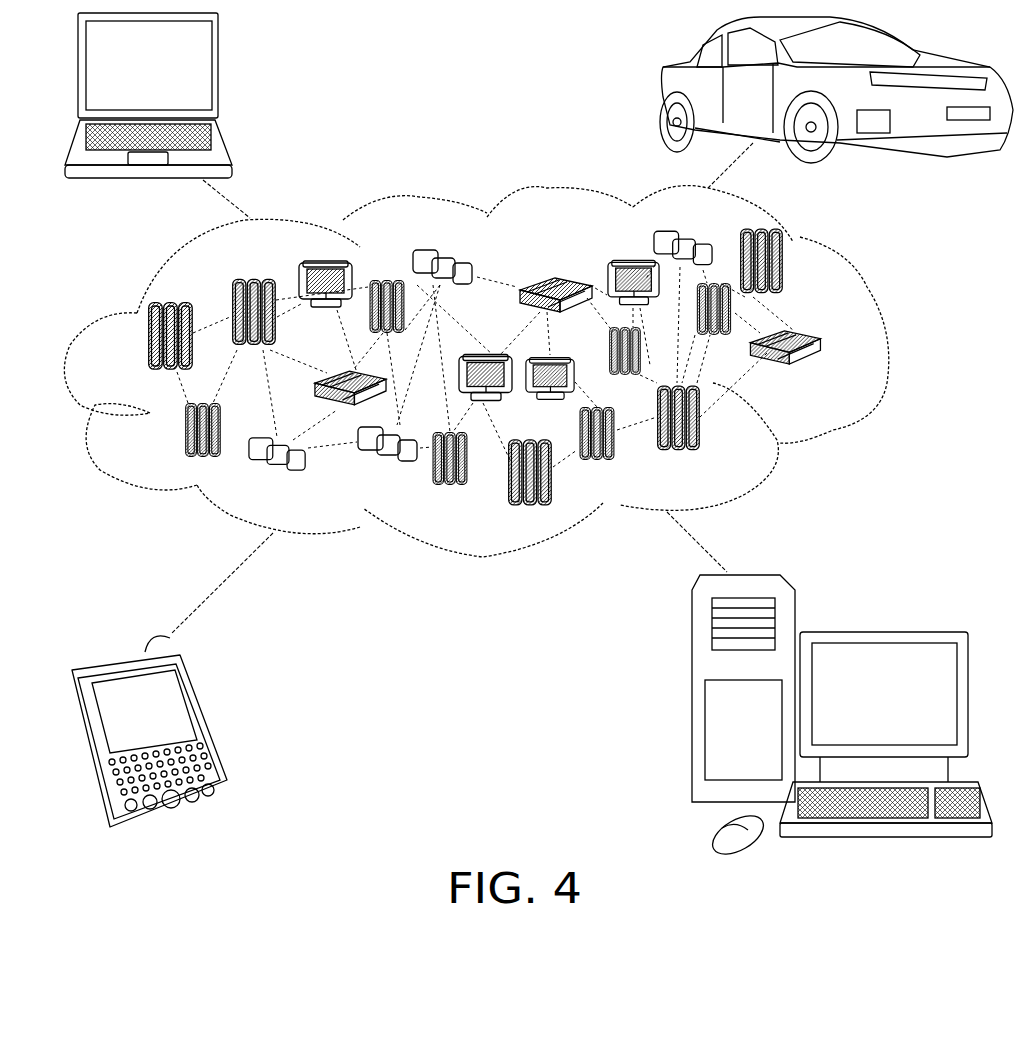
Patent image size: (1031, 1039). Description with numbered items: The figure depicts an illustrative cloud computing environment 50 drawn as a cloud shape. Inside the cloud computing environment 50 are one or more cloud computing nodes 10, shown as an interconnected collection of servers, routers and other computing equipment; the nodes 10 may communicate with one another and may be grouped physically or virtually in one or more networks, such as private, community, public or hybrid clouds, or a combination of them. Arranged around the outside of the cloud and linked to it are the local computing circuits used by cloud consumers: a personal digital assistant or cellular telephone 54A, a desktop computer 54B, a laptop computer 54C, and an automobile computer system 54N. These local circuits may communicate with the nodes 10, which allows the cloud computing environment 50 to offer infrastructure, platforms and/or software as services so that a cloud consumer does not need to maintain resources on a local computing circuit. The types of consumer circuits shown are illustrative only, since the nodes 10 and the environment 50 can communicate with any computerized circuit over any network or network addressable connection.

The cloud computing node 10 is at (823, 376).
The cloud computing environment 50 is at (500, 388).
The personal digital assistant or cellular telephone 54A is at (212, 726).
The desktop computer 54B is at (882, 631).
The laptop computer 54C is at (224, 76).
The automobile computer system 54N is at (662, 92).